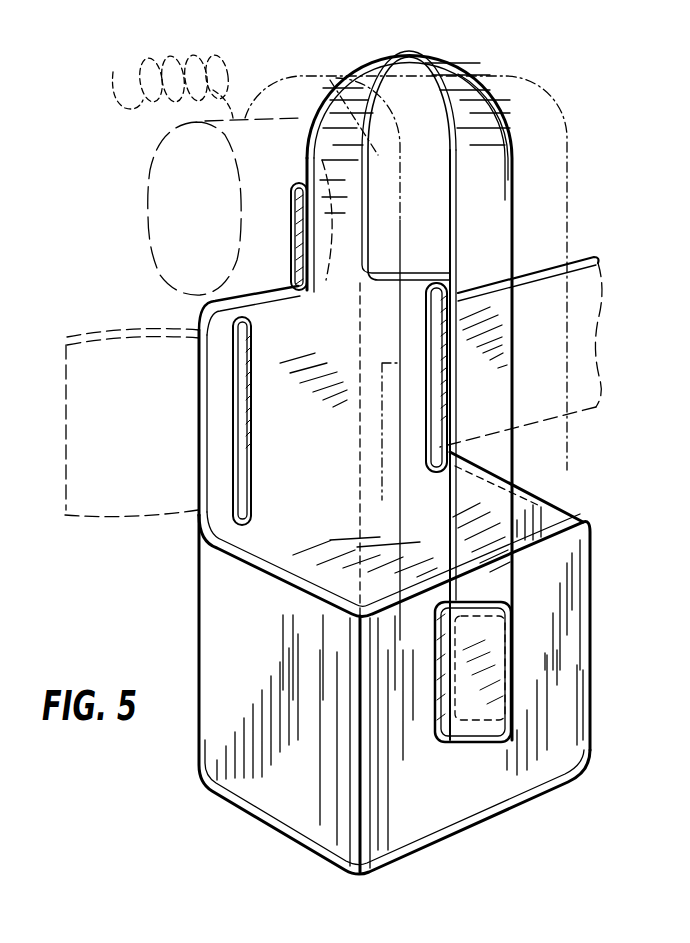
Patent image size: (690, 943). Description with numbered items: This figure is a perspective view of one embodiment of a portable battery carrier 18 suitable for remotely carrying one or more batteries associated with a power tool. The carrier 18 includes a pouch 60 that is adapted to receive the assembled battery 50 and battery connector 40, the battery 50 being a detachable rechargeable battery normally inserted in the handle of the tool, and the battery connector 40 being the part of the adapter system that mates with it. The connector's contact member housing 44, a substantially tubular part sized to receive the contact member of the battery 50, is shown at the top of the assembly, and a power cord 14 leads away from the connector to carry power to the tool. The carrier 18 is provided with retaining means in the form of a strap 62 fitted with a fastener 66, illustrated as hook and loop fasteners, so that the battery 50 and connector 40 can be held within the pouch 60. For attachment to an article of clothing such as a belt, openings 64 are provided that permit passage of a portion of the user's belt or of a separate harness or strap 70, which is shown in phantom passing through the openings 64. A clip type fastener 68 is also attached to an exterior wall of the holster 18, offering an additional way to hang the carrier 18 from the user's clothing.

The power cord 14 is at (228, 48).
The portable battery carrier 18 is at (606, 476).
The battery connector 40 is at (303, 83).
The contact member housing 44 is at (150, 232).
The battery 50 is at (550, 182).
The pouch 60 is at (585, 662).
The strap 62 is at (500, 127).
The openings 64 is at (250, 427).
The fastener 66 is at (437, 728).
The clip type fastener 68 is at (288, 217).
The harness or strap 70 is at (140, 441).